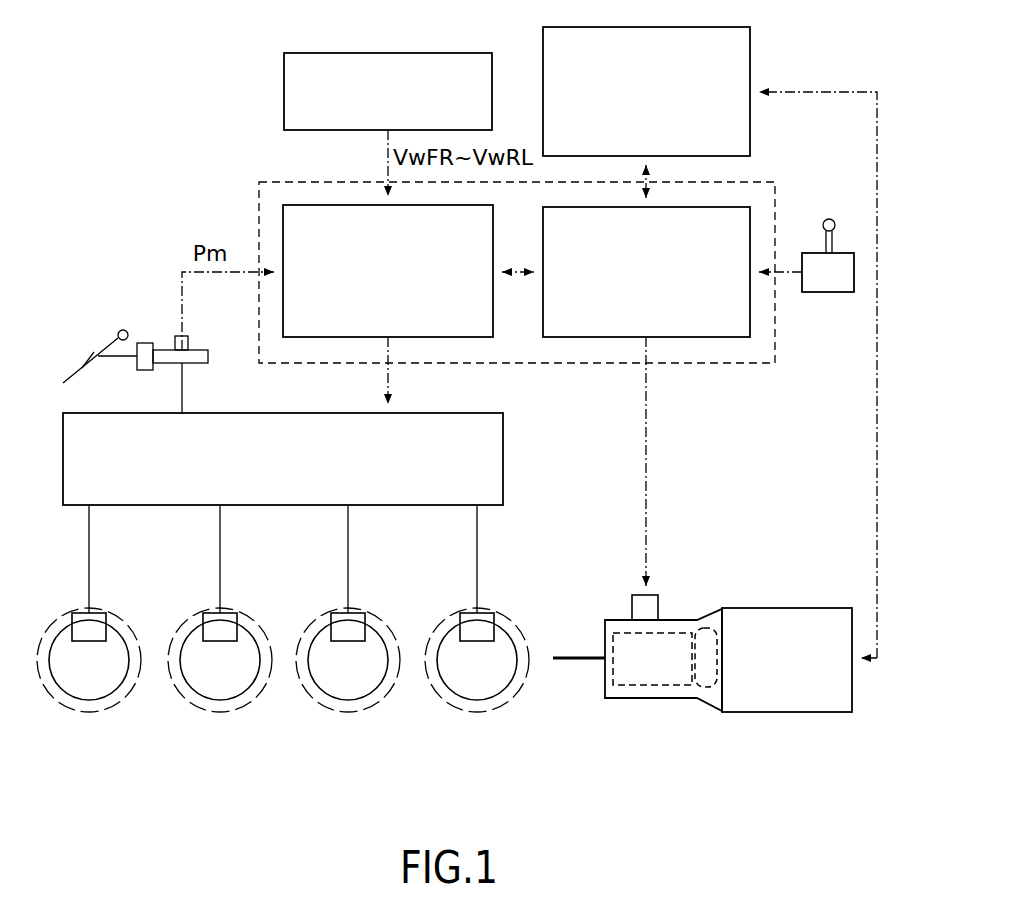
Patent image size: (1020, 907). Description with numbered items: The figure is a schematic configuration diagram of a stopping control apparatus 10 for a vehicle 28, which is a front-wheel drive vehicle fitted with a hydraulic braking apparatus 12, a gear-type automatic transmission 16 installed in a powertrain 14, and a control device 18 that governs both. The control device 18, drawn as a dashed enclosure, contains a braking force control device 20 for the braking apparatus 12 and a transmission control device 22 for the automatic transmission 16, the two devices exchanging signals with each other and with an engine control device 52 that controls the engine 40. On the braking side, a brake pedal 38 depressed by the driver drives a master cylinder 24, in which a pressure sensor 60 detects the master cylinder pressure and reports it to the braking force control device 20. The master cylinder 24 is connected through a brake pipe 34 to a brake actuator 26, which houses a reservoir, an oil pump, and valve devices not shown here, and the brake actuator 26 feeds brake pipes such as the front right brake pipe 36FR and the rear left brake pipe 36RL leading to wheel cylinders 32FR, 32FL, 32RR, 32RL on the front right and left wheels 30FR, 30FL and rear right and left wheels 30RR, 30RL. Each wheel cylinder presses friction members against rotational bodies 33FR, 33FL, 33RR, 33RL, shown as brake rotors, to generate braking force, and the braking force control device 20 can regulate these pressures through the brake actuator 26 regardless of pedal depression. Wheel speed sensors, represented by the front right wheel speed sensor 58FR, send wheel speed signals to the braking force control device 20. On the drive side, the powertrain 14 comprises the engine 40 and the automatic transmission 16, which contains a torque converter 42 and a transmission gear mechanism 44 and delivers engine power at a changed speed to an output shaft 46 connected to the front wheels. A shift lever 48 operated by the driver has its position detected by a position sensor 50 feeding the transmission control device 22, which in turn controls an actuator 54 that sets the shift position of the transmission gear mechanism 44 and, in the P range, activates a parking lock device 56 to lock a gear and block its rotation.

The stopping control apparatus 10 is at (220, 127).
The braking apparatus 12 is at (125, 281).
The powertrain 14 is at (708, 557).
The automatic transmission 16 is at (628, 700).
The control device 18 is at (258, 203).
The braking force control device 20 is at (374, 321).
The transmission control device 22 is at (632, 321).
The master cylinder 24 is at (193, 366).
The brake actuator 26 is at (503, 459).
The vehicle 28 is at (798, 49).
The front right wheel 30FR is at (112, 705).
The front left wheel 30FL is at (243, 705).
The rear right wheel 30RR is at (371, 705).
The rear left wheel 30RL is at (500, 705).
The front right wheel cylinder 32FR is at (98, 620).
The front left wheel cylinder 32FL is at (229, 620).
The rear right wheel cylinder 32RR is at (357, 620).
The rear left wheel cylinder 32RL is at (486, 620).
The front right rotational body 33FR is at (77, 684).
The front left rotational body 33FL is at (208, 684).
The rear right rotational body 33RR is at (336, 684).
The rear left rotational body 33RL is at (465, 684).
The brake pipe 34 is at (181, 394).
The front right brake pipe 36FR is at (89, 535).
The rear left brake pipe 36RL is at (477, 535).
The brake pedal 38 is at (85, 366).
The engine 40 is at (793, 607).
The torque converter 42 is at (705, 692).
The transmission gear mechanism 44 is at (657, 698).
The output shaft 46 is at (577, 663).
The shift lever 48 is at (823, 240).
The position sensor 50 is at (828, 292).
The engine control device 52 is at (632, 142).
The actuator 54 is at (630, 611).
The parking lock device 56 is at (665, 627).
The front right wheel speed sensor 58FR is at (387, 53).
The pressure sensor 60 is at (190, 343).